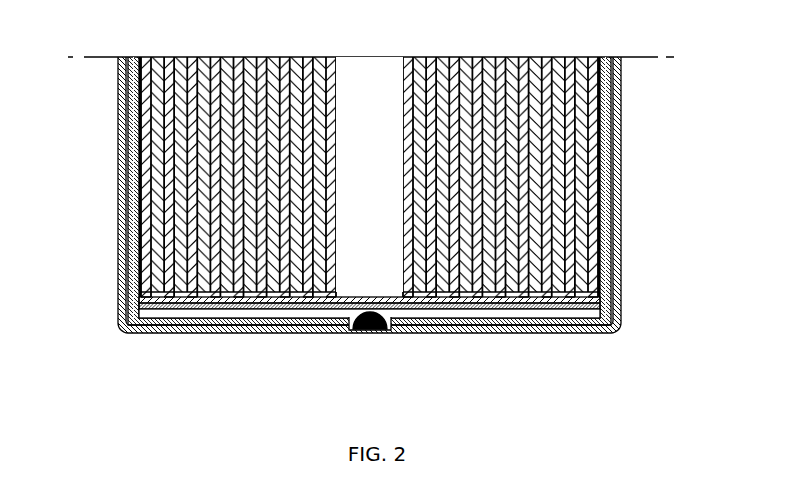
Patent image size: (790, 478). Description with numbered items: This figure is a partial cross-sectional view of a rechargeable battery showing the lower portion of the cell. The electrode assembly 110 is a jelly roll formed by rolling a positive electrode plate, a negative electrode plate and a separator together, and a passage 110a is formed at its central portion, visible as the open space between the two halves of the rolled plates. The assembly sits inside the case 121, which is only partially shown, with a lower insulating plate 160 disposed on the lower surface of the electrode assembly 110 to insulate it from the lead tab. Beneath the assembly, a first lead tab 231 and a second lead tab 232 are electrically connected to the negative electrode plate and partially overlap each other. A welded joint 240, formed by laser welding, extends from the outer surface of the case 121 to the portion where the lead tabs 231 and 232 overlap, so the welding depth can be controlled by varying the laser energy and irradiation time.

The electrode assembly 110 is at (618, 165).
The passage 110a is at (373, 221).
The case 121 is at (613, 104).
The lower insulating plate 160 is at (550, 298).
The first lead tab 231 is at (250, 305).
The second lead tab 232 is at (482, 316).
The welded joint 240 is at (362, 325).